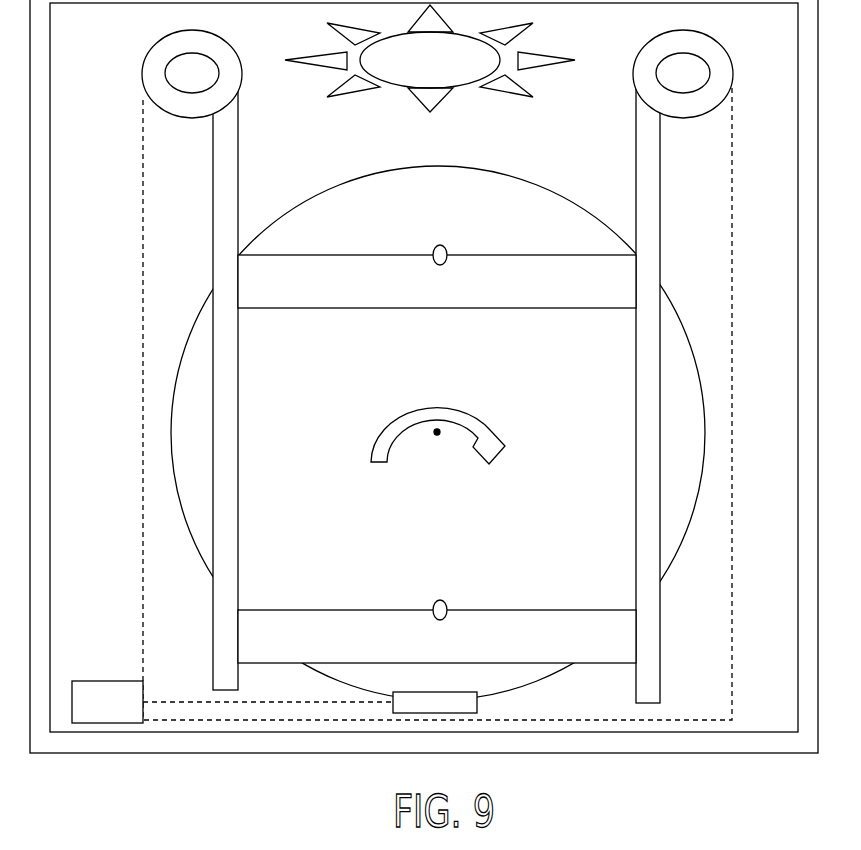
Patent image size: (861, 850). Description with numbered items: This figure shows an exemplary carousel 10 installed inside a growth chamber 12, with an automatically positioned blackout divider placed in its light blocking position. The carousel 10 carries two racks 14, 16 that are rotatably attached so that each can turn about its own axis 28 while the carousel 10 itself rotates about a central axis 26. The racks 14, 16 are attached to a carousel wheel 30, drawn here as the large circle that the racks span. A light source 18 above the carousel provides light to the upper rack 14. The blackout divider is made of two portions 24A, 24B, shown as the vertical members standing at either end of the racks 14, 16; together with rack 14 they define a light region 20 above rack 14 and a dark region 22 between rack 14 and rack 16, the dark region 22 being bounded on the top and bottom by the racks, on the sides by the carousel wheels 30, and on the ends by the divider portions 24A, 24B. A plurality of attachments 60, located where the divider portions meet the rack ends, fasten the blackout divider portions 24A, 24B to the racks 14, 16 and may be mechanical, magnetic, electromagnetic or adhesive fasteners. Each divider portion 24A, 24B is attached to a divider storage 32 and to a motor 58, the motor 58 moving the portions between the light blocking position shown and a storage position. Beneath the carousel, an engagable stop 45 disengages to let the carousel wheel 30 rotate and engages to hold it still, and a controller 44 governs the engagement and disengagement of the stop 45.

The carousel 10 is at (172, 323).
The growth chamber 12 is at (798, 83).
The rack 14 is at (527, 255).
The rack 16 is at (527, 610).
The light source 18 is at (462, 88).
The light region 20 is at (565, 168).
The dark region 22 is at (615, 478).
The blackout divider portion 24A is at (238, 153).
The blackout divider portion 24B is at (660, 176).
The axis 26 is at (437, 436).
The axis 28 is at (441, 245).
The carousel wheel 30 is at (688, 333).
The divider storage 32 is at (226, 43).
The controller 44 is at (92, 714).
The engagable stop 45 is at (477, 704).
The motor 58 is at (182, 86).
The attachments 60 is at (238, 255).